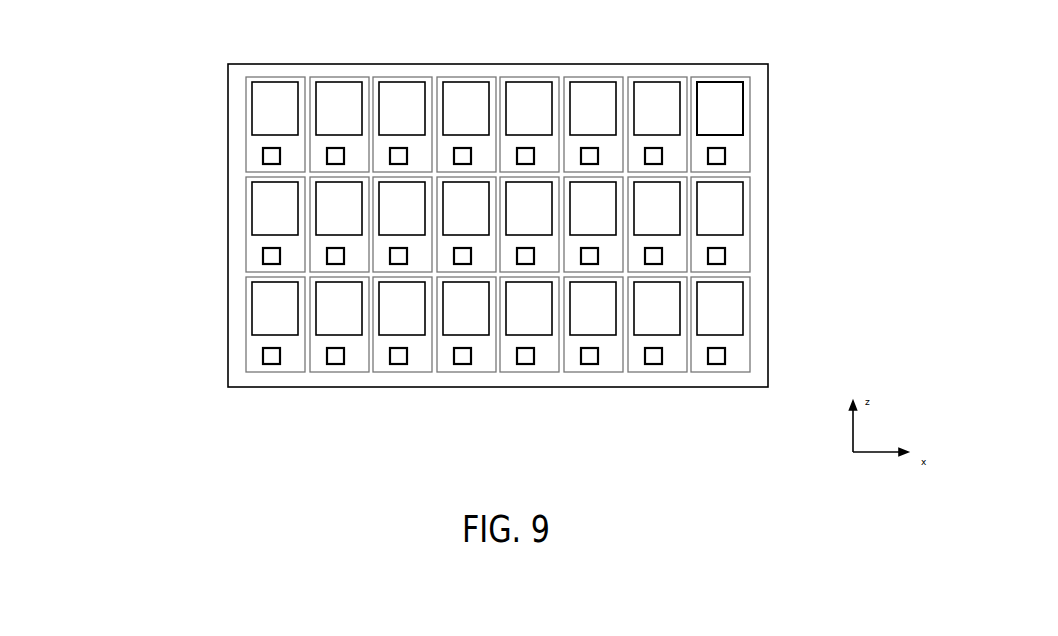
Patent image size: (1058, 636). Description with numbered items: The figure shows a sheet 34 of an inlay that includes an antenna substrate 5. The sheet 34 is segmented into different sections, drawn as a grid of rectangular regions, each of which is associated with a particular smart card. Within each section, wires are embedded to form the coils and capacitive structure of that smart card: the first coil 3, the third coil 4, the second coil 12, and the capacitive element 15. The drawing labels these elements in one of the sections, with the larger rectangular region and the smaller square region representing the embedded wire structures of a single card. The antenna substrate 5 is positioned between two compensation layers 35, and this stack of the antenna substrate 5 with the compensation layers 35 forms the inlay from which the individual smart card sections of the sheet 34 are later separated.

The sheet 34 is at (222, 137).
The second coil 12 is at (733, 80).
The capacitive element 15 is at (713, 112).
The antenna substrate 5 is at (723, 123).
The compensation layers 35 is at (723, 123).
The third coil 4 is at (747, 147).
The first coil 3 is at (747, 164).